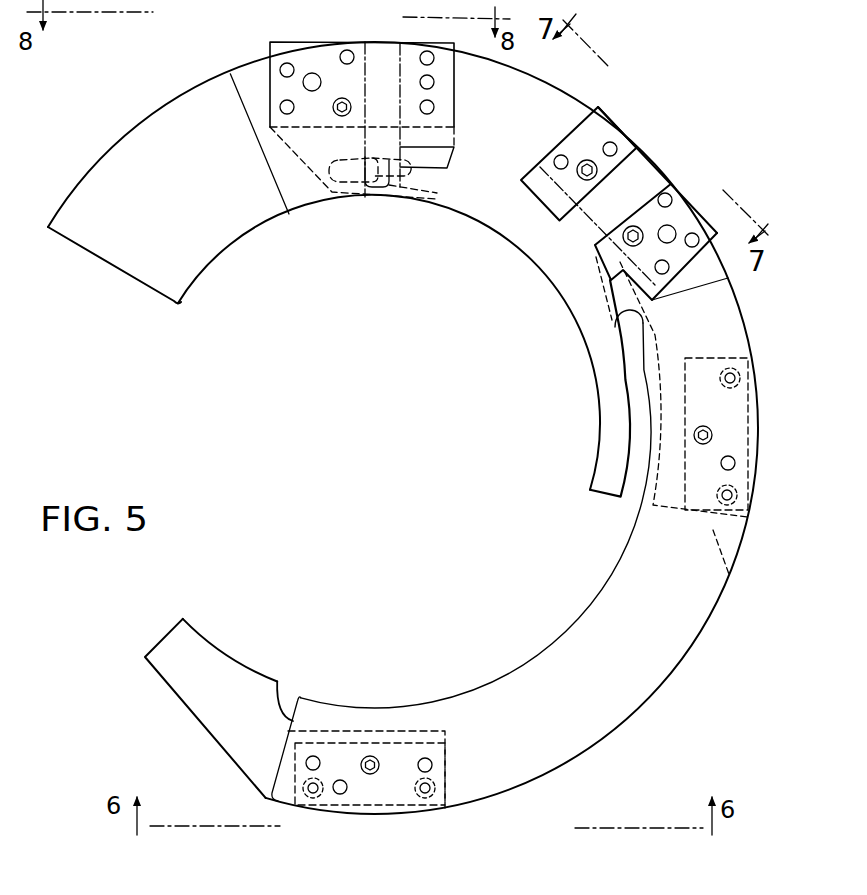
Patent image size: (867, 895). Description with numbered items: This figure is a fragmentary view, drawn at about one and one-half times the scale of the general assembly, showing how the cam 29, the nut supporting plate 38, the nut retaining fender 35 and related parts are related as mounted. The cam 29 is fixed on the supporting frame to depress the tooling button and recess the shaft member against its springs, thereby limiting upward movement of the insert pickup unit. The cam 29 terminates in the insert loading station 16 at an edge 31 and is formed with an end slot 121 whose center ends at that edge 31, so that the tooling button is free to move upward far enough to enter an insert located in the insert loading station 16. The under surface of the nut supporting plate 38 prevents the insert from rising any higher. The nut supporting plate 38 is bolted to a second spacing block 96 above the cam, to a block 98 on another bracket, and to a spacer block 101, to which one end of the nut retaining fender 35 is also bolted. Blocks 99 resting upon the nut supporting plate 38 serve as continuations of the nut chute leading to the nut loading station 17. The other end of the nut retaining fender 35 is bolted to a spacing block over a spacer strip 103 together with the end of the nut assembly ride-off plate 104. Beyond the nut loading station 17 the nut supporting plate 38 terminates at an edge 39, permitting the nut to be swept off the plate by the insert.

The insert loading station 16 is at (389, 202).
The nut loading station 17 is at (566, 315).
The cam 29 is at (147, 133).
The edge 31 is at (382, 173).
The nut retaining fender 35 is at (591, 614).
The nut supporting plate 38 is at (257, 75).
The edge 39 is at (609, 501).
The second spacing block 96 is at (284, 45).
The block 98 is at (603, 116).
The blocks 99 is at (548, 204).
The spacer block 101 is at (727, 357).
The spacer strip 103 is at (374, 796).
The nut assembly ride-off plate 104 is at (243, 742).
The end slot 121 is at (437, 195).